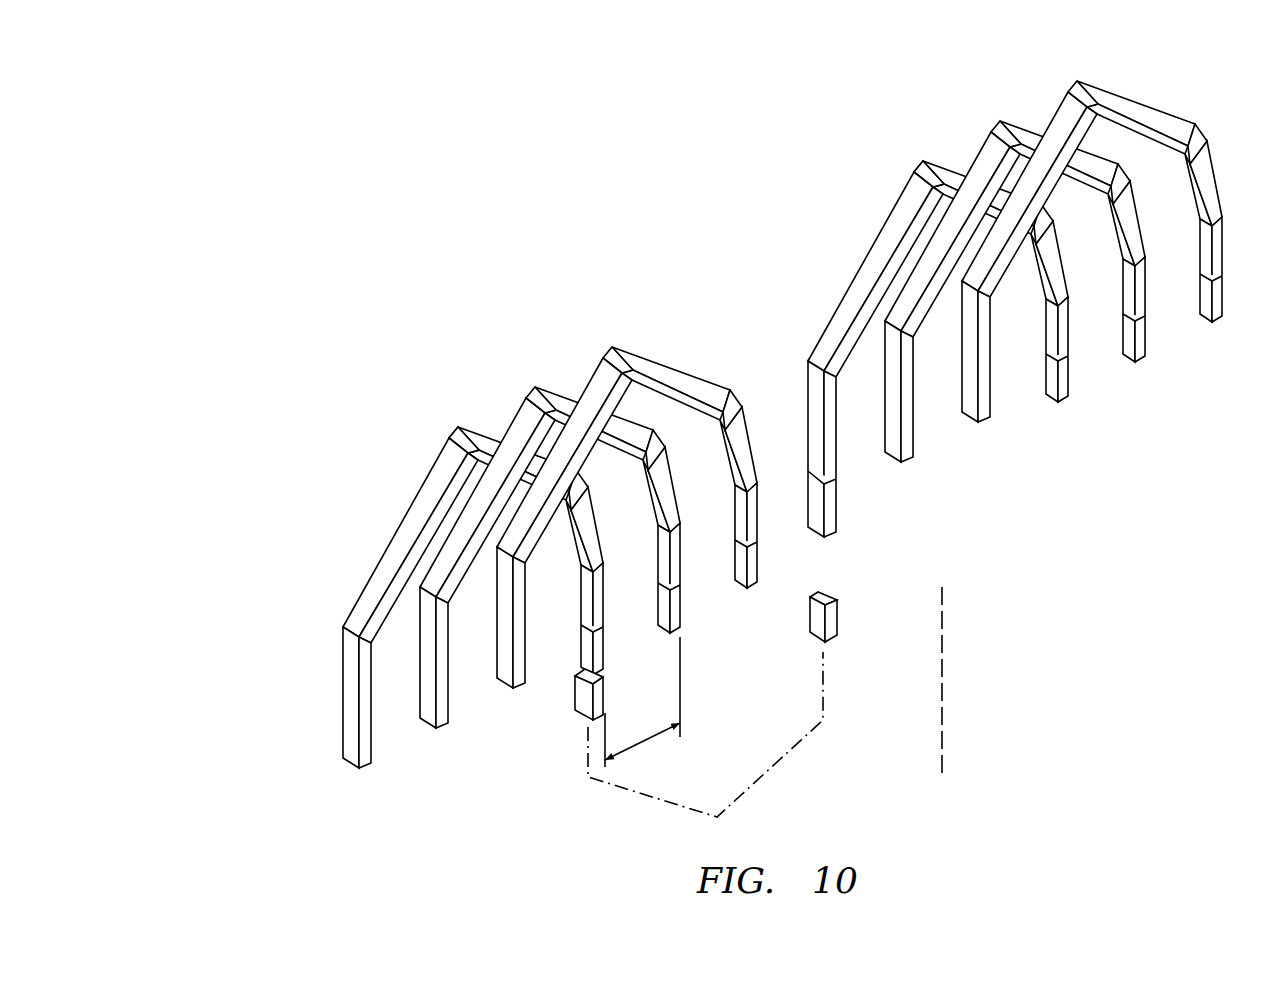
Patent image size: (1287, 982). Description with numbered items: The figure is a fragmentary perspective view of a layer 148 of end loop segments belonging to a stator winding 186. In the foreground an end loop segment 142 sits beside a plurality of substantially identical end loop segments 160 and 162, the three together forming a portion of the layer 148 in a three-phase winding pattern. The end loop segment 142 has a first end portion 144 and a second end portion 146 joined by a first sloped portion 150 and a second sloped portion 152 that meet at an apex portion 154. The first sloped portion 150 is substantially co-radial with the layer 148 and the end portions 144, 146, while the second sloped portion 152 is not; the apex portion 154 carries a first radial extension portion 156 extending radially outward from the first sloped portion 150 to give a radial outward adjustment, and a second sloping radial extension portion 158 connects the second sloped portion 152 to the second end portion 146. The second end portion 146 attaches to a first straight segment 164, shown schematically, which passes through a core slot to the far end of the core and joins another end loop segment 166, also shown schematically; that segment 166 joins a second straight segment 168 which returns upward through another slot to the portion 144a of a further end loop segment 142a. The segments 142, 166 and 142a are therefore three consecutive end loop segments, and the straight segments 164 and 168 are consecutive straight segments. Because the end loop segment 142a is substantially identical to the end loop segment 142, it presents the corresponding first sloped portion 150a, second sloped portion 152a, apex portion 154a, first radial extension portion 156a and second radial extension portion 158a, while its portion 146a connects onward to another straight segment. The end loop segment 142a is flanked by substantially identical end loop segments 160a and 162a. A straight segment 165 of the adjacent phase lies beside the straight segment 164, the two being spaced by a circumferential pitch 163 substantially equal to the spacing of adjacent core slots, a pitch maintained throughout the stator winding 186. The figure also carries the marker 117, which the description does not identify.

The reference plane line 117 is at (942, 642).
The end loop segment 142 is at (447, 430).
The first end portion 144 is at (367, 748).
The second end portion 146 is at (600, 607).
The layer 148 is at (514, 532).
The first sloped portion 150 is at (376, 567).
The second sloped portion 152 is at (497, 431).
The apex portion 154 is at (444, 449).
The first radial extension portion 156 is at (480, 455).
The second sloping radial extension portion 158 is at (591, 546).
The end loop segment 160 is at (552, 382).
The end loop segment 162 is at (637, 344).
The circumferential pitch 163 is at (647, 727).
The first straight segment 164 is at (574, 658).
The straight segment 165 is at (685, 603).
The end loop segment 166 is at (772, 792).
The second straight segment 168 is at (842, 512).
The stator winding 186 is at (775, 415).
The end loop segment 142a is at (860, 267).
The portion of end loop segment 144a is at (830, 457).
The portion of end loop segment 146a is at (1065, 393).
The inclined bar segment 150a is at (812, 338).
The second bend portion 152a is at (962, 164).
The outer corner 154a is at (912, 187).
The transverse segment 156a is at (940, 184).
The offset bend of second leg 158a is at (1057, 283).
The end loop segment 160a is at (988, 116).
The end loop segment 162a is at (1160, 101).